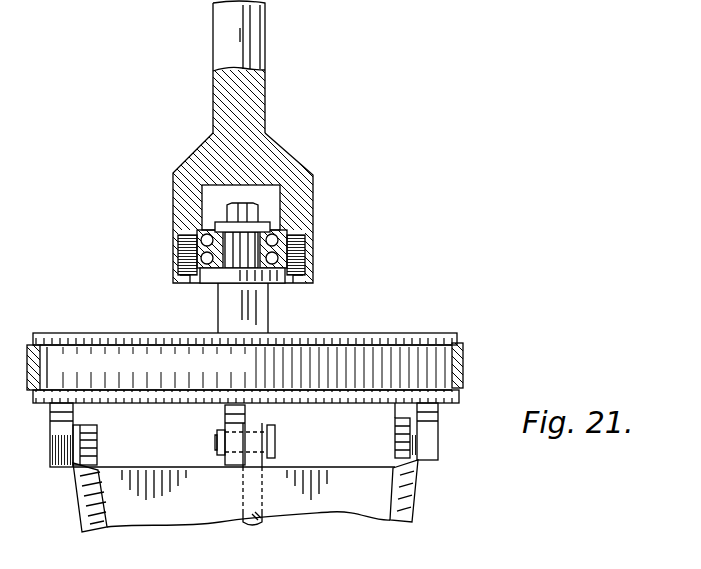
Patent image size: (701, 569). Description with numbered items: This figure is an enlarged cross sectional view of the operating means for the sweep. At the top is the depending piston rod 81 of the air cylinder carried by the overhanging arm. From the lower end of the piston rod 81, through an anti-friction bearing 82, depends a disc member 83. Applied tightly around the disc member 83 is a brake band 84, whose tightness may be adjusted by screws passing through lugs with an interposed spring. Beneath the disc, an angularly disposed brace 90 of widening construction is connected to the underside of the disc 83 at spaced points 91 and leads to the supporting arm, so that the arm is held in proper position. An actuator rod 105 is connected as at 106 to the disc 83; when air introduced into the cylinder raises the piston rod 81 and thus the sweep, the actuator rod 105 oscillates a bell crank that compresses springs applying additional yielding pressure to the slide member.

The piston rod 81 is at (265, 47).
The anti-friction bearing 82 is at (274, 224).
The disc member 83 is at (362, 340).
The brake band 84 is at (464, 364).
The angularly disposed brace 90 is at (405, 505).
The spaced points 91 is at (98, 437).
The actuator rod 105 is at (262, 517).
The connection of actuator rod to disc 106 is at (278, 445).